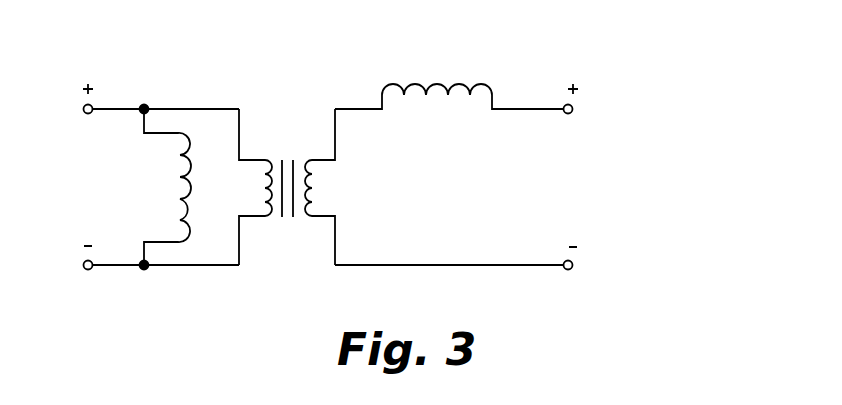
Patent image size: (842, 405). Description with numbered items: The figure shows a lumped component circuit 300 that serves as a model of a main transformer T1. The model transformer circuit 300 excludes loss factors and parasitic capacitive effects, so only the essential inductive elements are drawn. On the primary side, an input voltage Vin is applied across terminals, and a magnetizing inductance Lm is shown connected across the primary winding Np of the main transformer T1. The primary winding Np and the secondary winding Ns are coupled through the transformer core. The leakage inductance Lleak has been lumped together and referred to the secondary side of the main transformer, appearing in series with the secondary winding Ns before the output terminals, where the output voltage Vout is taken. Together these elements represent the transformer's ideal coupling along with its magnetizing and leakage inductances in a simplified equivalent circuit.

The lumped component circuit 300 is at (580, 53).
The input voltage terminals Vin is at (146, 177).
The magnetizing inductance Lm is at (160, 187).
The main transformer T1 is at (288, 187).
The primary winding Np is at (248, 187).
The secondary winding Ns is at (329, 187).
The leakage inductance Lleak is at (449, 76).
The output voltage terminals Vout is at (485, 177).